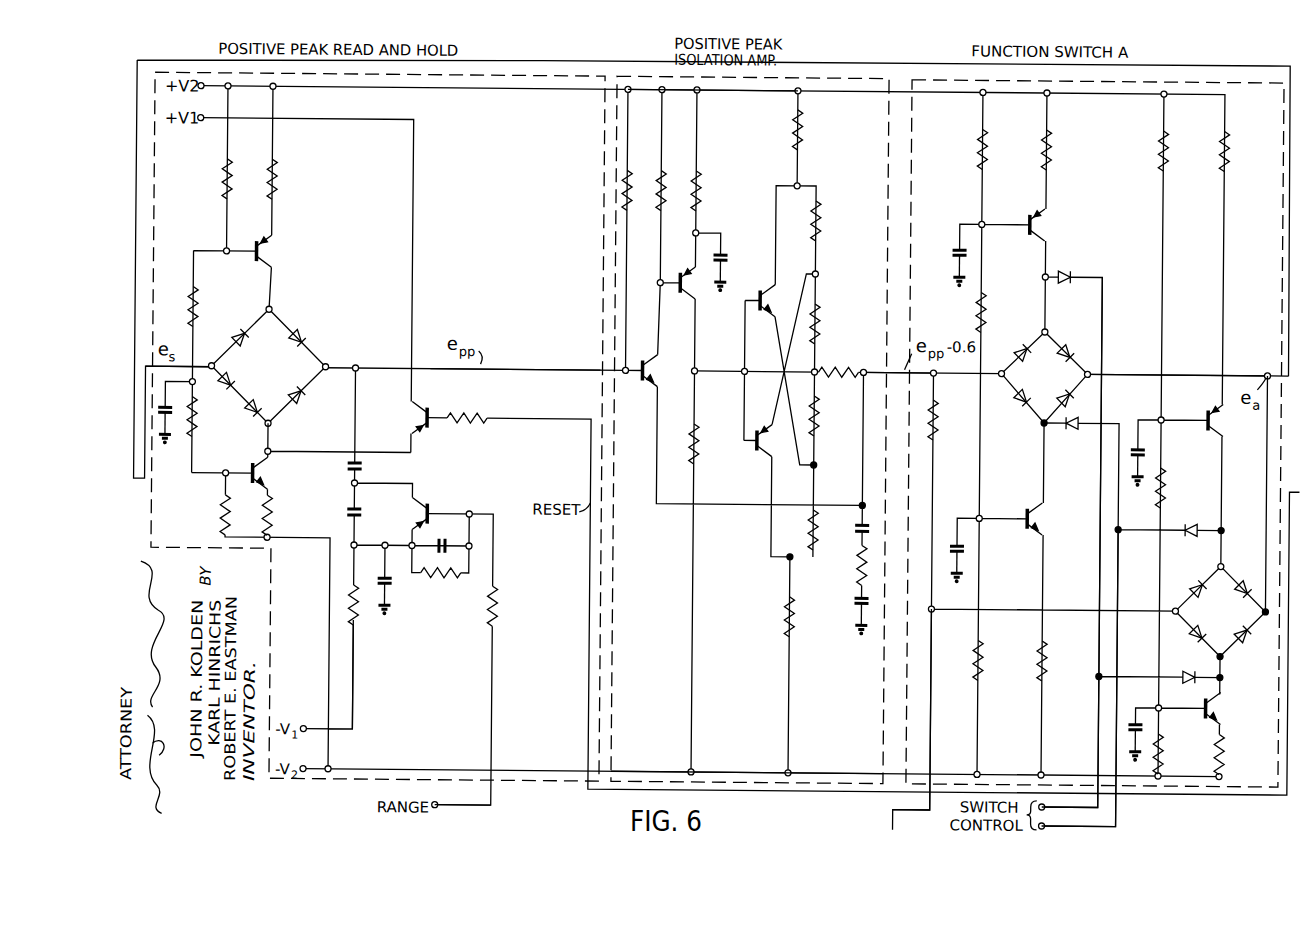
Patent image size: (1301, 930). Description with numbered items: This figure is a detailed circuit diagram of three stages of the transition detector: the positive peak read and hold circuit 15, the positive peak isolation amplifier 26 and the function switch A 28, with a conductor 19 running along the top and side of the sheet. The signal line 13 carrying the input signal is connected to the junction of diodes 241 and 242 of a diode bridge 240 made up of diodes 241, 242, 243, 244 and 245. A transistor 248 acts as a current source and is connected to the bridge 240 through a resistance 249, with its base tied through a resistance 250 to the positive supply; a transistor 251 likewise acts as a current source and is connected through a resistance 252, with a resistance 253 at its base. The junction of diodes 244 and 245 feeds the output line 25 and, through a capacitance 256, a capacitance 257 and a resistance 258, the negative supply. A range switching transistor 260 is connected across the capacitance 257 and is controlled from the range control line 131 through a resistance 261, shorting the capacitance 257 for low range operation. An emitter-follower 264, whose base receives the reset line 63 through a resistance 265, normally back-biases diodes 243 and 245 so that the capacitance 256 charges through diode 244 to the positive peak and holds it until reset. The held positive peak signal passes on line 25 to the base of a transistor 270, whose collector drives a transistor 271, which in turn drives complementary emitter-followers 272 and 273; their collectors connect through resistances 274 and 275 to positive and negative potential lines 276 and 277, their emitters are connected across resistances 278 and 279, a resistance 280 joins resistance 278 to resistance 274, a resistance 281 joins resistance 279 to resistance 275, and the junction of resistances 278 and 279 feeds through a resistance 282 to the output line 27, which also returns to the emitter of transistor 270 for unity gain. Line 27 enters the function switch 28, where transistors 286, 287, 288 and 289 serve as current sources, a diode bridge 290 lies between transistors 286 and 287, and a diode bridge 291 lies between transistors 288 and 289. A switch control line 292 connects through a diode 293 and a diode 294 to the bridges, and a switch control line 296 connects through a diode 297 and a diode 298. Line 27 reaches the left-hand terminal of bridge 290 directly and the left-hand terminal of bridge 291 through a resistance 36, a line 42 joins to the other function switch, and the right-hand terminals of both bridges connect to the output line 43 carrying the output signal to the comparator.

The conductor 19 is at (138, 66).
The positive peak read and hold circuit 15 is at (490, 76).
The positive peak isolation amplifier 26 is at (620, 77).
The function switch A 28 is at (930, 78).
The signal line 13 is at (181, 355).
The output line 25 is at (534, 369).
The output line 27 is at (868, 362).
The output line 43 is at (1262, 371).
The resistance 36 is at (936, 405).
The line 42 is at (929, 760).
The reset line 63 is at (591, 533).
The range control line 131 is at (464, 808).
The diode bridge 240 is at (277, 356).
The diode 241 is at (243, 316).
The diode 242 is at (235, 385).
The diode 243 is at (245, 413).
The diode 244 is at (302, 337).
The diode 245 is at (300, 400).
The transistor 248 is at (262, 253).
The resistance 249 is at (278, 189).
The resistance 250 is at (218, 184).
The transistor 251 is at (262, 475).
The resistance 252 is at (274, 523).
The resistance 253 is at (218, 507).
The capacitance 256 is at (364, 471).
The capacitance 257 is at (364, 518).
The resistance 258 is at (355, 626).
The range switching transistor 260 is at (431, 506).
The resistance 261 is at (500, 611).
The emitter-follower 264 is at (429, 408).
The resistance 265 is at (466, 417).
The transistor 270 is at (644, 358).
The transistor 271 is at (686, 292).
The transistor 272 is at (763, 288).
The transistor 273 is at (755, 452).
The resistance 274 is at (800, 135).
The resistance 275 is at (796, 625).
The positive potential line 276 is at (705, 91).
The negative potential line 277 is at (710, 772).
The resistance 278 is at (822, 333).
The resistance 279 is at (820, 421).
The resistance 280 is at (820, 221).
The resistance 281 is at (818, 532).
The resistance 282 is at (849, 370).
The transistor 286 is at (1027, 213).
The transistor 287 is at (1022, 511).
The transistor 288 is at (1210, 408).
The transistor 289 is at (1216, 708).
The diode bridge 290 is at (1064, 382).
The diode bridge 291 is at (1240, 617).
The switch control line 292 is at (1050, 808).
The diode 293 is at (1070, 271).
The diode 294 is at (1190, 667).
The switch control line 296 is at (1062, 826).
The diode 297 is at (1072, 425).
The diode 298 is at (1196, 520).